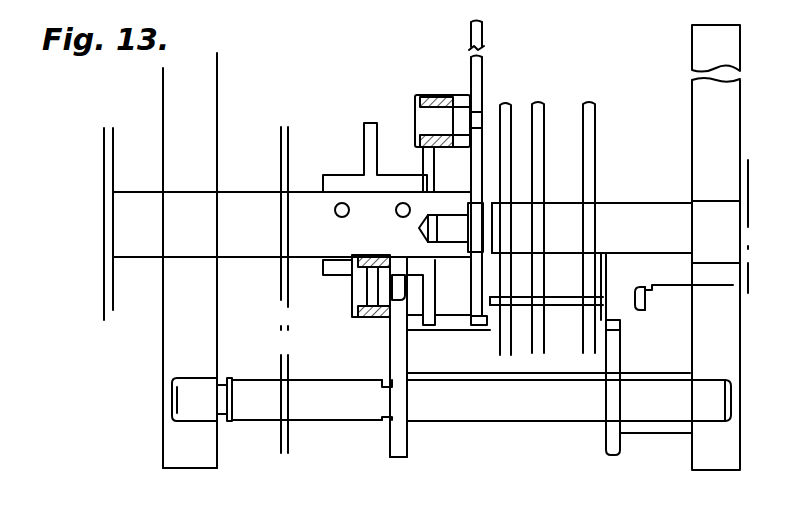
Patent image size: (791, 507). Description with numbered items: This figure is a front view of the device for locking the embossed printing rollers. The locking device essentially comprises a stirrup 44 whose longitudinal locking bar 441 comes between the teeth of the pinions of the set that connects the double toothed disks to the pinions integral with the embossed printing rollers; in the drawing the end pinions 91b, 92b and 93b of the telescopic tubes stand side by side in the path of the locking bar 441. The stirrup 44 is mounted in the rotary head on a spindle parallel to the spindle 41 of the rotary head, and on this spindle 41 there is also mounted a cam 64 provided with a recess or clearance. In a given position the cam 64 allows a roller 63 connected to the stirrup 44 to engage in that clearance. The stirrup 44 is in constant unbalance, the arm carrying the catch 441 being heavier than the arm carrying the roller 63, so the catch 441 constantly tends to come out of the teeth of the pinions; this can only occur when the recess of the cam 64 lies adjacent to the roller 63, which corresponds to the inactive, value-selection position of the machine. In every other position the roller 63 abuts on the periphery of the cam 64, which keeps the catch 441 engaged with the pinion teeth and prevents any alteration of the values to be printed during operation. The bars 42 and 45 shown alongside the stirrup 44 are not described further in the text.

The spindle 41 is at (627, 232).
The support bar 42 is at (247, 208).
The stirrup 44 is at (453, 358).
The longitudinal locking bar 441 is at (568, 304).
The shaft 45 is at (515, 403).
The roller 63 is at (365, 319).
The cam 64 is at (375, 122).
The pin 91b is at (506, 110).
The pin 92b is at (538, 110).
The pinion 93b is at (587, 110).